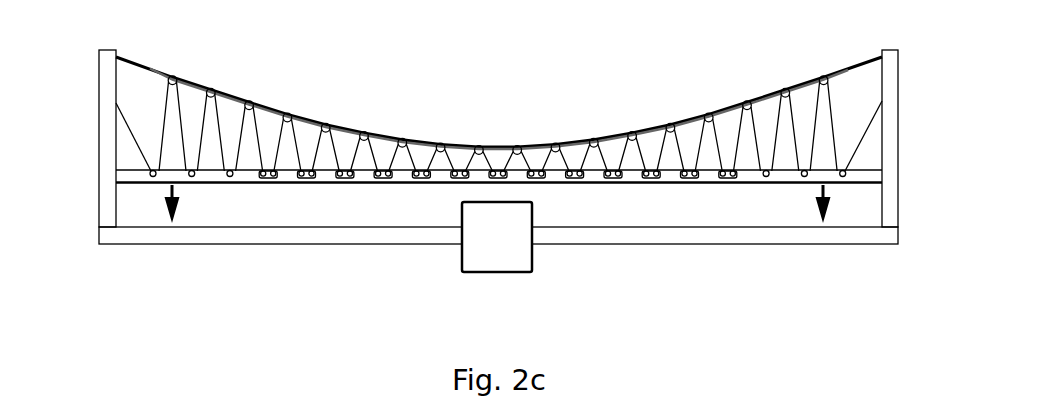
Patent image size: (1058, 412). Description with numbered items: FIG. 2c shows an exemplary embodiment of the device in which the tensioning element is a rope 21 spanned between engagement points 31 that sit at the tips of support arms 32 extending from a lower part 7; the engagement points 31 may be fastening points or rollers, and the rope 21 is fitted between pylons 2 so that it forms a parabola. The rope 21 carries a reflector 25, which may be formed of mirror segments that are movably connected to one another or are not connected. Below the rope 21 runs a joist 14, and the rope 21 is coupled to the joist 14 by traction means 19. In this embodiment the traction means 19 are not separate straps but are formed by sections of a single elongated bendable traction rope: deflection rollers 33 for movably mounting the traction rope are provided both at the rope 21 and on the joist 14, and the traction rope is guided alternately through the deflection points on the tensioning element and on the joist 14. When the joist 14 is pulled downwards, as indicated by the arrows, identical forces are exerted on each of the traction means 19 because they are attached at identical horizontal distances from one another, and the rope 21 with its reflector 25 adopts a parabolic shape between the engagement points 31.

The pylon 2 is at (502, 169).
The lower part 7 is at (536, 259).
The joist 14 is at (322, 178).
The traction means 19 is at (133, 143).
The rope 21 is at (125, 55).
The reflector 25 is at (767, 86).
The engagement point 31 is at (110, 58).
The support arm 32 is at (268, 233).
The deflection roller 33 is at (367, 128).